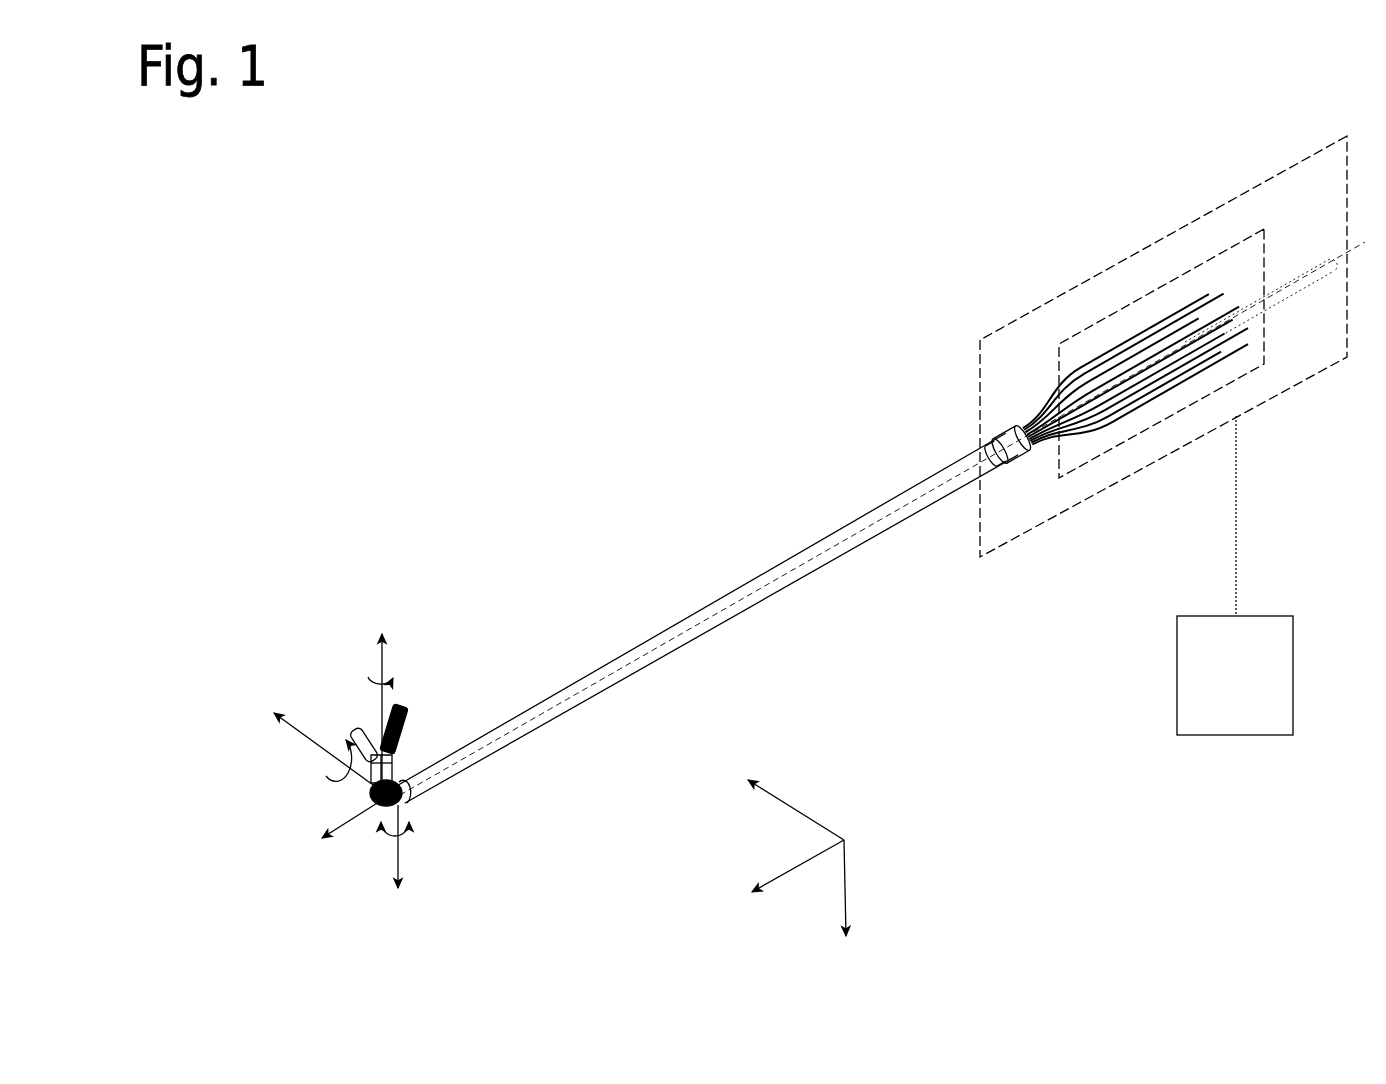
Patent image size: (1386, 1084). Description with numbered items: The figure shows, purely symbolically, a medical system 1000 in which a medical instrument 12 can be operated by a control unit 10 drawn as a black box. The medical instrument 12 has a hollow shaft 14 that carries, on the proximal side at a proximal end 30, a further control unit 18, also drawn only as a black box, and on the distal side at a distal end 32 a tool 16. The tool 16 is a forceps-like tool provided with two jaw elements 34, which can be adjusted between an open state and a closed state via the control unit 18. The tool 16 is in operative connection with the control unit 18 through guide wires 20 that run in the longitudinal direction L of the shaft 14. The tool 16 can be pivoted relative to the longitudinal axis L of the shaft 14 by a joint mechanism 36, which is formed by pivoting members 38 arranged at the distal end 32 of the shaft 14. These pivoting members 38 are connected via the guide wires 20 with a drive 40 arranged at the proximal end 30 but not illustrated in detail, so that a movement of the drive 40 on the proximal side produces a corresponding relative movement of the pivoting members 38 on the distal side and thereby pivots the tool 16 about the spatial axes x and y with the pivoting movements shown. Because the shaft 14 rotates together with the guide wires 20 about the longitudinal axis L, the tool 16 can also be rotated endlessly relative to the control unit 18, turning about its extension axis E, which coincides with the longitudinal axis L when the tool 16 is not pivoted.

The medical system 1000 is at (455, 291).
The control unit 10 is at (1204, 687).
The medical instrument 12 is at (830, 623).
The hollow shaft 14 is at (643, 643).
The tool 16 is at (318, 793).
The control unit 18 is at (1137, 254).
The guide wires 20 is at (1053, 383).
The proximal end 30 is at (990, 422).
The distal end 32 is at (415, 796).
The jaw elements 34 is at (369, 766).
The joint mechanism 36 is at (381, 828).
The pivoting members 38 is at (381, 806).
The drive 40 is at (1236, 384).